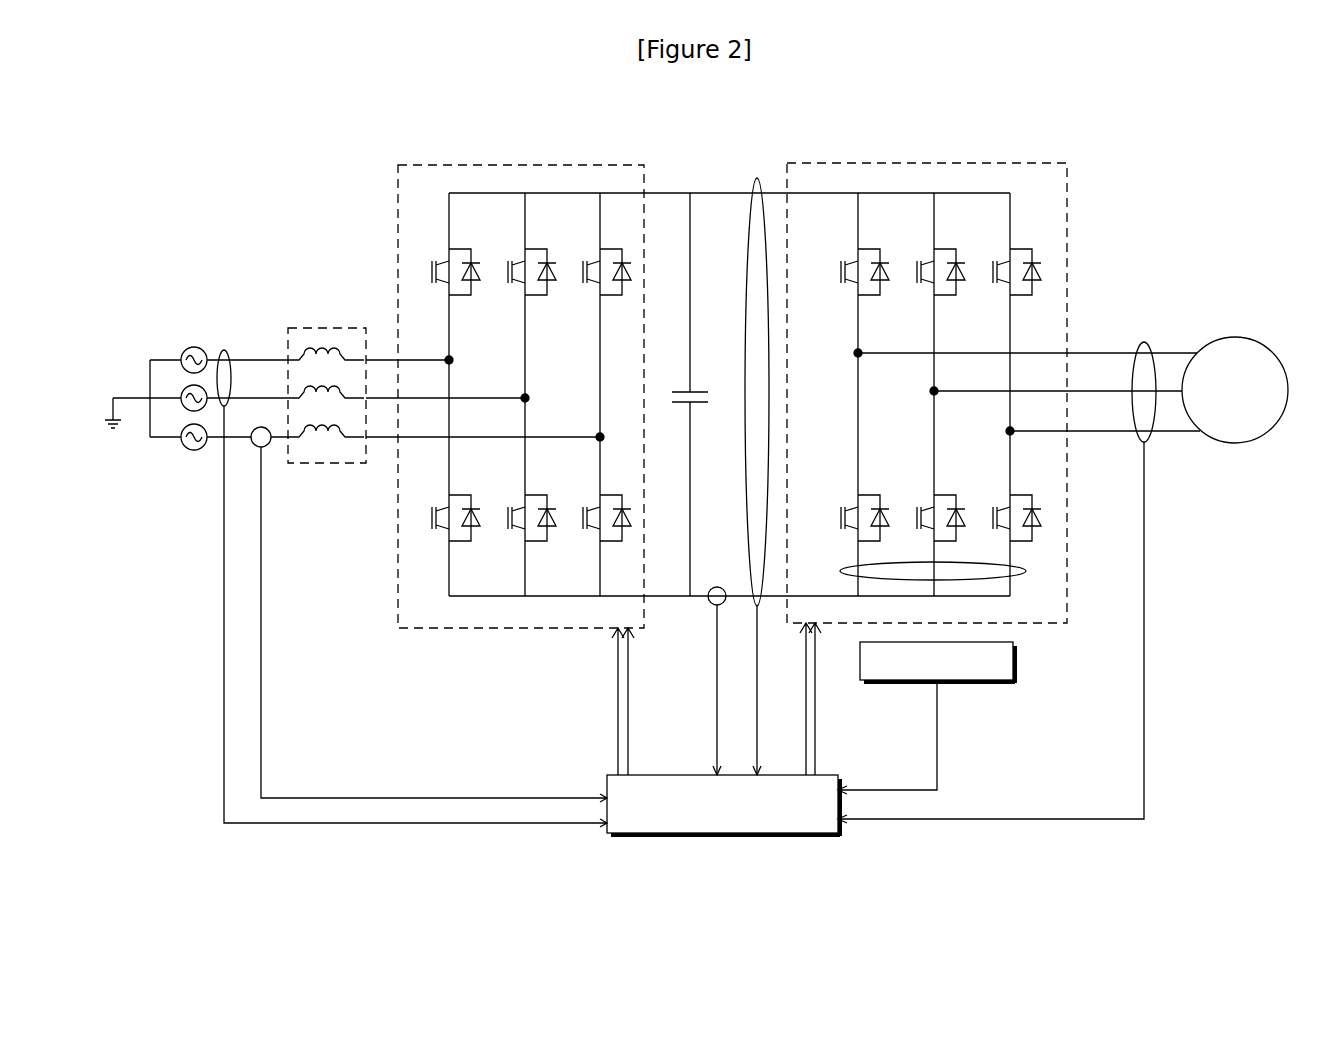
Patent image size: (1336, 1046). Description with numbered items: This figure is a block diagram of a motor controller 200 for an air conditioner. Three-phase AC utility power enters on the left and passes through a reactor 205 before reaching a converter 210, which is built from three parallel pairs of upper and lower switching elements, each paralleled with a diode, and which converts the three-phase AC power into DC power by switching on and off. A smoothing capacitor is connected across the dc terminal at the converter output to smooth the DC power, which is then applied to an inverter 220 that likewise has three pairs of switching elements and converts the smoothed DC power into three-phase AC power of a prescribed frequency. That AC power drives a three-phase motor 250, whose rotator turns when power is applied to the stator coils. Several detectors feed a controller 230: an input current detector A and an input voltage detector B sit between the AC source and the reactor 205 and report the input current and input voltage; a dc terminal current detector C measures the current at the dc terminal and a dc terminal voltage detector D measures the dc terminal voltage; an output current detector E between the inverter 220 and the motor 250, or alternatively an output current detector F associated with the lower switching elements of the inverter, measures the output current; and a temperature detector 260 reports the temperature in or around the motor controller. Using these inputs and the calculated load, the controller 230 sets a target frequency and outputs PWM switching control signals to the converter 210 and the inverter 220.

The motor controller 200 is at (315, 163).
The reactor 205 is at (330, 463).
The converter 210 is at (523, 628).
The inverter 220 is at (1040, 625).
The controller 230 is at (697, 835).
The three-phase motor 250 is at (1233, 337).
The temperature detector 260 is at (975, 682).
The input current detector A is at (412, 577).
The input voltage detector B is at (429, 606).
The dc terminal current detector C is at (717, 670).
The dc terminal voltage detector D is at (757, 466).
The output current detector E is at (1147, 342).
The output current detector F is at (1024, 574).